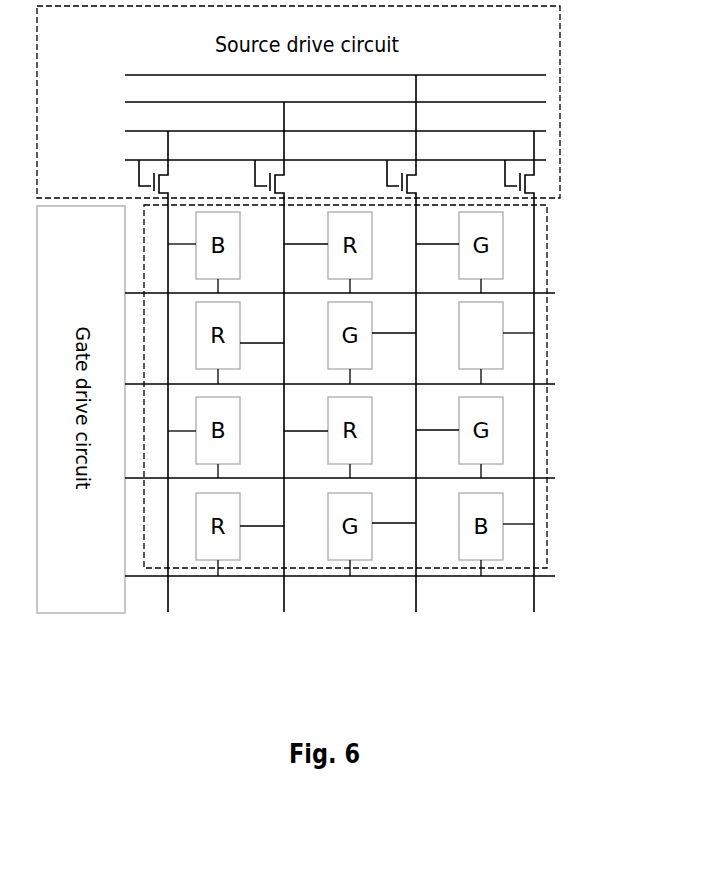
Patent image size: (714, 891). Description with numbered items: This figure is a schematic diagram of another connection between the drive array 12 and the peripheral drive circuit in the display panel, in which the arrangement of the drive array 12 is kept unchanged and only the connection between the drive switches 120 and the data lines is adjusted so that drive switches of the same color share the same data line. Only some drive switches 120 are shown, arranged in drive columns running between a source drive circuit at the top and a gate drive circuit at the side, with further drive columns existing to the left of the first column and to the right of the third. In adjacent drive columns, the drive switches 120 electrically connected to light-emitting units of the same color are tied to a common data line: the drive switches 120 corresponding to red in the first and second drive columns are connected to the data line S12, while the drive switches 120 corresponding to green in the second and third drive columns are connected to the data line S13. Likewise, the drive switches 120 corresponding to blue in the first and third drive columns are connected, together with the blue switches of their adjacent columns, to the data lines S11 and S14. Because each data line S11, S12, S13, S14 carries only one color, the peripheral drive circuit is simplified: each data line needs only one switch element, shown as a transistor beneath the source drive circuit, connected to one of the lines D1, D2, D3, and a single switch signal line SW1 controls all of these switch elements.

The drive array 12 is at (541, 449).
The drive switch 120 is at (507, 316).
The data line S11 is at (167, 606).
The data line S12 is at (283, 606).
The data line S13 is at (415, 606).
The data line S14 is at (533, 606).
The data line D1 is at (312, 132).
The data line D2 is at (312, 103).
The data line D3 is at (312, 75).
The switch control line SW1 is at (304, 160).